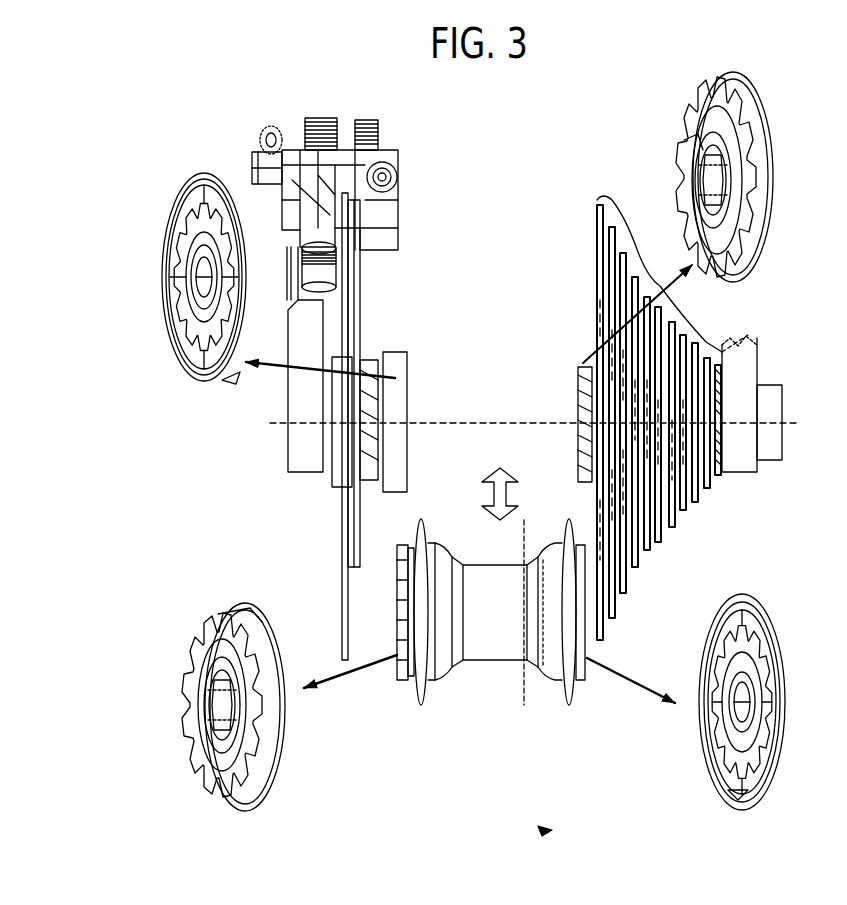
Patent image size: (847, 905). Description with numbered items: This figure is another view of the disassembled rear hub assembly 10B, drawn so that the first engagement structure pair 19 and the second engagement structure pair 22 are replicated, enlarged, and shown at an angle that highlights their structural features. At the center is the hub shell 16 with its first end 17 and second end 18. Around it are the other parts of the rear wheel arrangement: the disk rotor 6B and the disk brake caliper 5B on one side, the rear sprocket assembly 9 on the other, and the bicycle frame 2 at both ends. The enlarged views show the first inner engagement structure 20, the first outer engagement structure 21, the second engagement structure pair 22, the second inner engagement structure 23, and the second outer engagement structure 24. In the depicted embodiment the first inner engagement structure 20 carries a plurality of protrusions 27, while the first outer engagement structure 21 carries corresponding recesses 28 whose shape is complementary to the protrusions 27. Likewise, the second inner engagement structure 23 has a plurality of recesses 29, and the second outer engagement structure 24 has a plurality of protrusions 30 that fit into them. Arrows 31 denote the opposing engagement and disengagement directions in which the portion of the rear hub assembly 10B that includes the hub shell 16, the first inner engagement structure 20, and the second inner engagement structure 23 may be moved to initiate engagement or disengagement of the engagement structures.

The bicycle frame 2 is at (300, 450).
The disk brake caliper 5B is at (406, 108).
The disk rotor 6B is at (343, 567).
The rear sprocket assembly 9 is at (637, 312).
The rear hub assembly 10B is at (548, 830).
The hub shell 16 is at (592, 722).
The first end 17 is at (386, 600).
The second end 18 is at (600, 653).
The first engagement structure pair 19 is at (194, 594).
The first inner engagement structure 20 is at (399, 655).
The first outer engagement structure 21 is at (160, 172).
The second engagement structure pair 22 is at (568, 447).
The second inner engagement structure 23 is at (582, 668).
The second outer engagement structure 24 is at (581, 405).
The protrusions 27 is at (245, 608).
The recesses 28 is at (212, 396).
The recesses 29 is at (736, 797).
The protrusions 30 is at (688, 138).
The arrows 31 is at (508, 475).